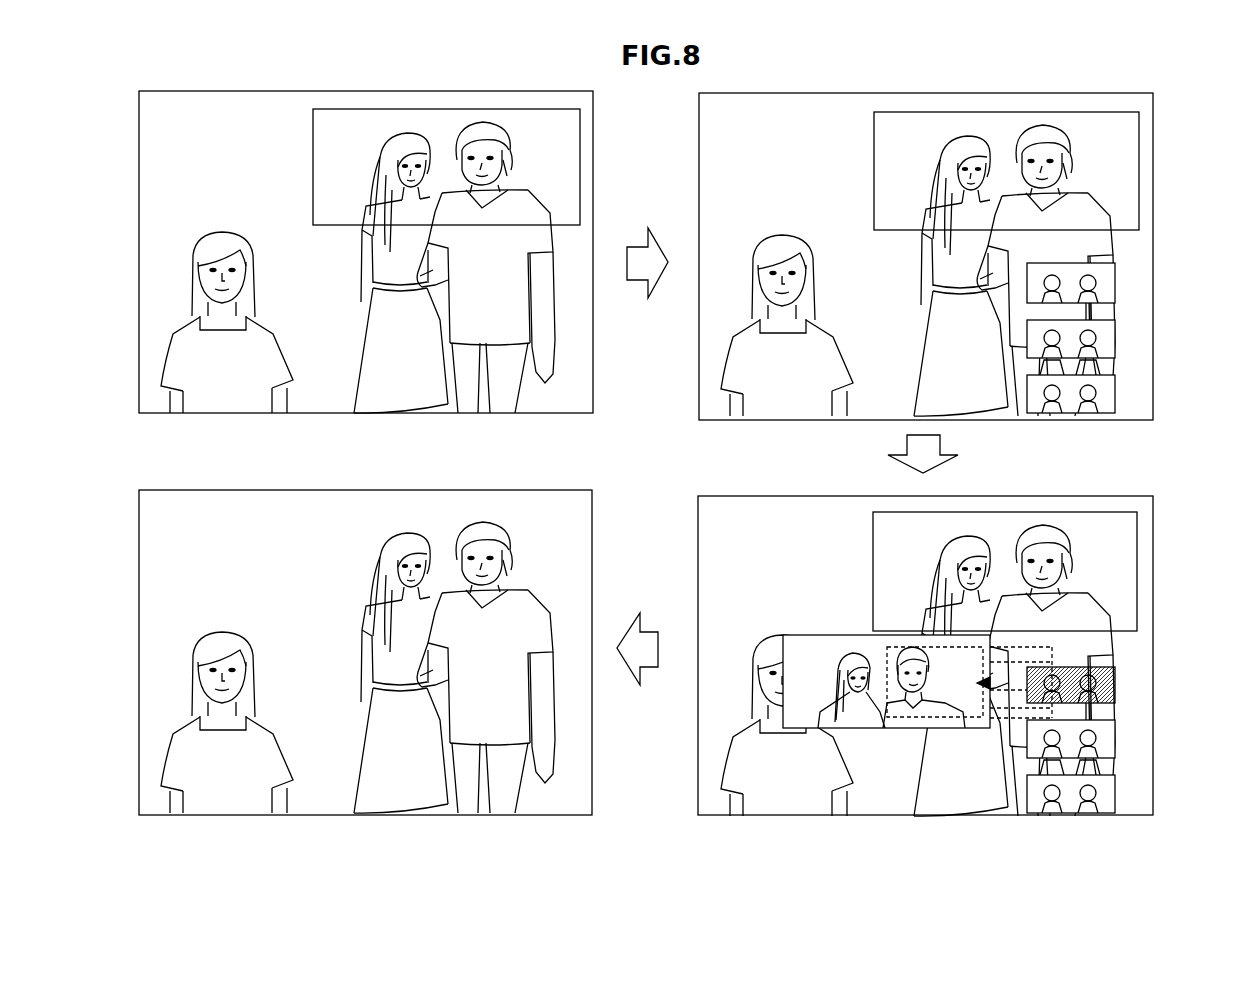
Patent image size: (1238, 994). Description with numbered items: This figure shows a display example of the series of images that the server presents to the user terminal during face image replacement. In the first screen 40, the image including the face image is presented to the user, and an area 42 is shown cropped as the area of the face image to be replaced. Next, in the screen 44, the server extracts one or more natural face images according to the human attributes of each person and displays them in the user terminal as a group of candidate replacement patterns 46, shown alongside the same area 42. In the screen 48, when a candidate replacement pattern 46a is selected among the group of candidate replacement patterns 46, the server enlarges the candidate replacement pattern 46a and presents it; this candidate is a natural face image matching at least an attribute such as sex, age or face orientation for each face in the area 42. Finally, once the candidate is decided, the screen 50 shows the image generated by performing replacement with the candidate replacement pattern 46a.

The screen 40 is at (431, 90).
The area 42 is at (580, 118).
The screen 44 is at (989, 93).
The group of candidate replacement patterns 46 is at (1130, 268).
The candidate replacement pattern 46a is at (1115, 673).
The screen 48 is at (985, 496).
The screen 50 is at (422, 489).